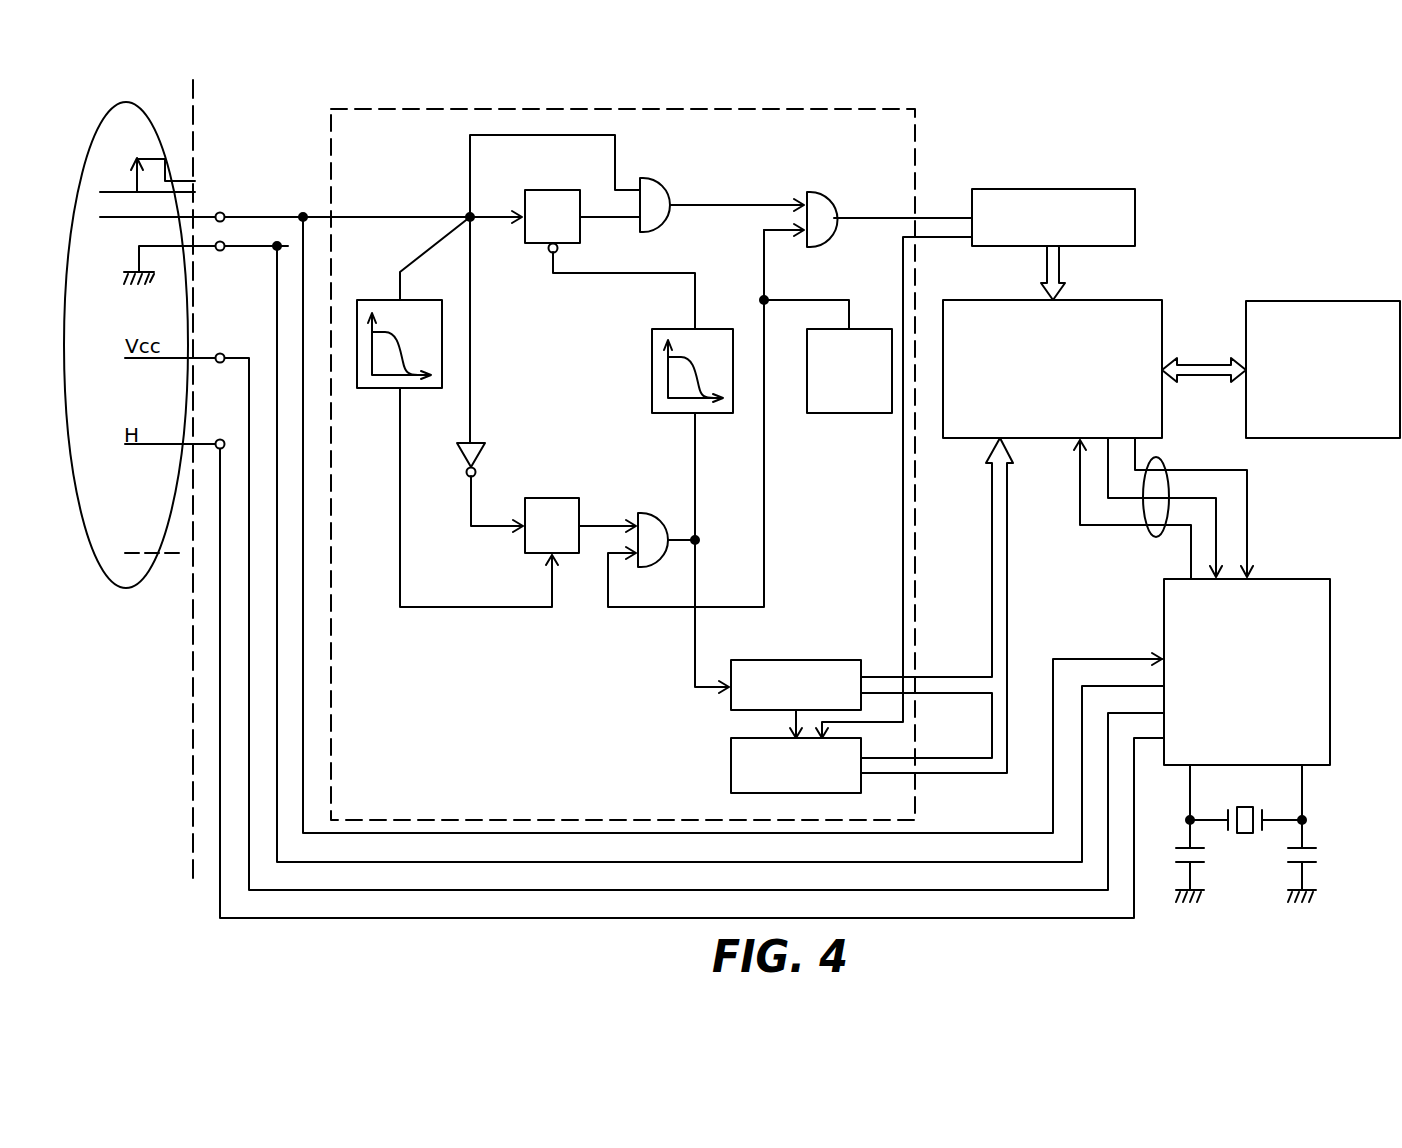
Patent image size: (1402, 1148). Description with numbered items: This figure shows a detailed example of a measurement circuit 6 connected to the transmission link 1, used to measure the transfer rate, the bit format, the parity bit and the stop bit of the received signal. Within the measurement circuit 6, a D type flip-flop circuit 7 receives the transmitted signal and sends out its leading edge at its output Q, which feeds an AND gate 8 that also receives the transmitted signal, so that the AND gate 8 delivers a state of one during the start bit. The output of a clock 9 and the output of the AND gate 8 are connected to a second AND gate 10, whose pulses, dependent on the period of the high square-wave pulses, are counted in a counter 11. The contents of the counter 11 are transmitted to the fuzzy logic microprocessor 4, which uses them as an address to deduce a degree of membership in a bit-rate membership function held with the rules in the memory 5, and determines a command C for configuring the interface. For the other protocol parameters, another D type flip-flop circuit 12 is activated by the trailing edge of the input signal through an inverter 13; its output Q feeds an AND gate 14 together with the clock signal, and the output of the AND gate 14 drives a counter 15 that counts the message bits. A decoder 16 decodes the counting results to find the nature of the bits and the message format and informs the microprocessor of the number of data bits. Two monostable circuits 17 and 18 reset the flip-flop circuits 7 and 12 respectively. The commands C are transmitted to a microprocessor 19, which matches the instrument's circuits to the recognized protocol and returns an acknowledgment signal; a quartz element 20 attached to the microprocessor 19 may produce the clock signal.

The transmission link 1 is at (125, 590).
The fuzzy logic microprocessor 4 is at (1148, 300).
The memory 5 is at (1366, 301).
The measurement circuit 6 is at (331, 124).
The D type flip-flop circuit 7 is at (557, 190).
The AND gate 8 is at (660, 185).
The clock 9 is at (872, 329).
The second AND gate 10 is at (836, 192).
The counter 11 is at (1122, 189).
The D type flip-flop circuit 12 is at (558, 498).
The inverter 13 is at (483, 447).
The AND gate 14 is at (648, 513).
The counter 15 is at (834, 660).
The decoder 16 is at (731, 779).
The monostable circuit 17 is at (652, 355).
The monostable circuit 18 is at (370, 388).
The microprocessor 19 is at (1310, 579).
The quartz element 20 is at (1245, 835).
The command C is at (1150, 535).